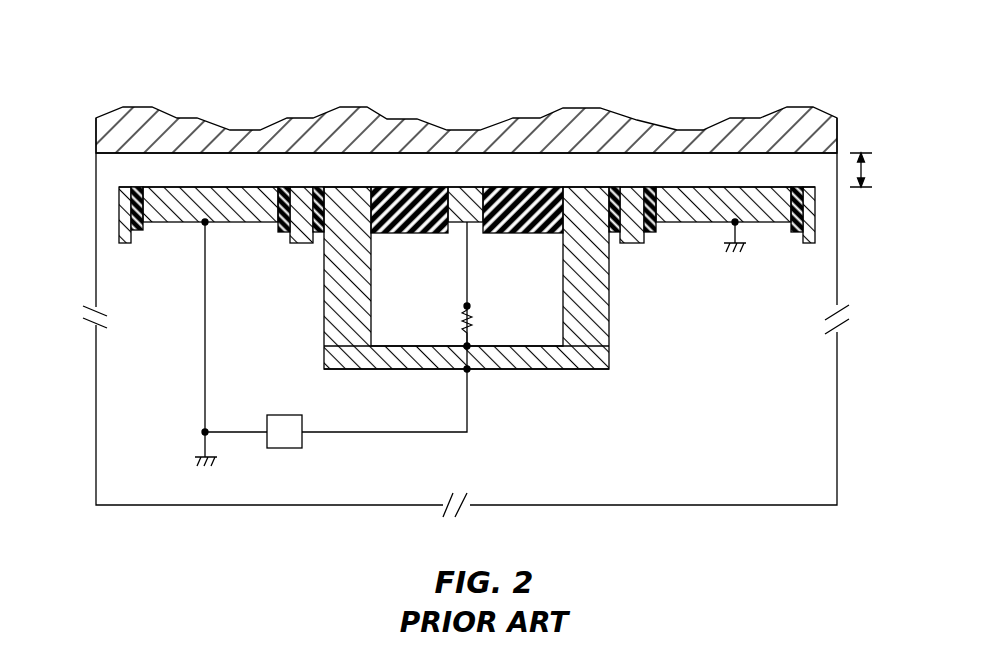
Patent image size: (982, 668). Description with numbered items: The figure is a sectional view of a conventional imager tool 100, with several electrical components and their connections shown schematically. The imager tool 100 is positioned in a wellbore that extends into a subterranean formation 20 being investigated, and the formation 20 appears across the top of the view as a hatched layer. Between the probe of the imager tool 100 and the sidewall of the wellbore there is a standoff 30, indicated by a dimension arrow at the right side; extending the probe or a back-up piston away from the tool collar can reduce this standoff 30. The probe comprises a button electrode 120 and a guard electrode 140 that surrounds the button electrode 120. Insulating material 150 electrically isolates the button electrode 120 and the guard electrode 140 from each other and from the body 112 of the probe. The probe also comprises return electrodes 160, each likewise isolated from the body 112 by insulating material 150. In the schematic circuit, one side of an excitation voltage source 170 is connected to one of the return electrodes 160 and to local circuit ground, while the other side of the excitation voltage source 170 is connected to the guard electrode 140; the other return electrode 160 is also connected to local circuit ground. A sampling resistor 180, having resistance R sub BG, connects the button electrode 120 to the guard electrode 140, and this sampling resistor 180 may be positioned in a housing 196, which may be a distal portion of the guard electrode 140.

The subterranean formation 20 is at (136, 113).
The standoff 30 is at (861, 153).
The imager tool 100 is at (361, 177).
The body 112 is at (117, 215).
The button electrode 120 is at (468, 187).
The guard electrode 140 is at (331, 187).
The insulating material 150 is at (137, 187).
The return electrode 160 is at (205, 187).
The excitation voltage source 170 is at (285, 448).
The sampling resistor 180 is at (467, 333).
The housing 196 is at (323, 358).